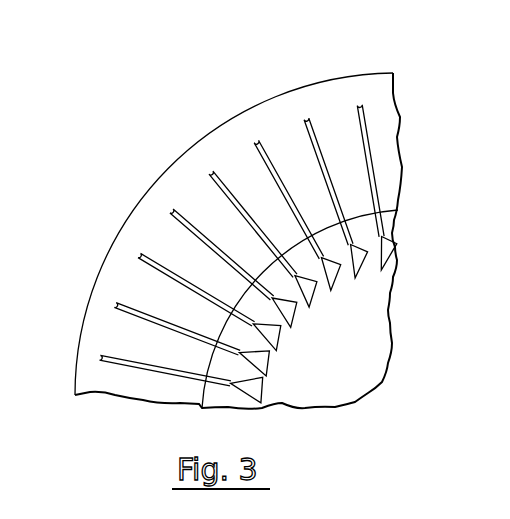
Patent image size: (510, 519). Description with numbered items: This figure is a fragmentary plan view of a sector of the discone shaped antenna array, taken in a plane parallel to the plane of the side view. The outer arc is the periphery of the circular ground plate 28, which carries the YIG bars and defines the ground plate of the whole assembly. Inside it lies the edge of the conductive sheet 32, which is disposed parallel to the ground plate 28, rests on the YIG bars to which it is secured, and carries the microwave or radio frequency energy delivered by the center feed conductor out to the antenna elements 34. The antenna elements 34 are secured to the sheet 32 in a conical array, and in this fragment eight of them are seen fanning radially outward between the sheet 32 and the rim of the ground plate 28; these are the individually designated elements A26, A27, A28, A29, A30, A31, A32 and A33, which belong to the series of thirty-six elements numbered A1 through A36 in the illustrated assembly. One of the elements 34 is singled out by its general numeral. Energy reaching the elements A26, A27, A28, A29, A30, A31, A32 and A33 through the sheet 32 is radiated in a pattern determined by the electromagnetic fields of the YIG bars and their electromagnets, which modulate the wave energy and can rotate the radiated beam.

The ground plate 28 is at (147, 212).
The conductive sheet 32 is at (375, 284).
The antenna elements 34 is at (371, 150).
The antenna element A26 is at (106, 350).
The antenna element A27 is at (121, 300).
The antenna element A28 is at (145, 250).
The antenna element A29 is at (180, 203).
The antenna element A30 is at (222, 168).
The antenna element A31 is at (268, 136).
The antenna element A32 is at (314, 114).
The antenna element A33 is at (365, 106).